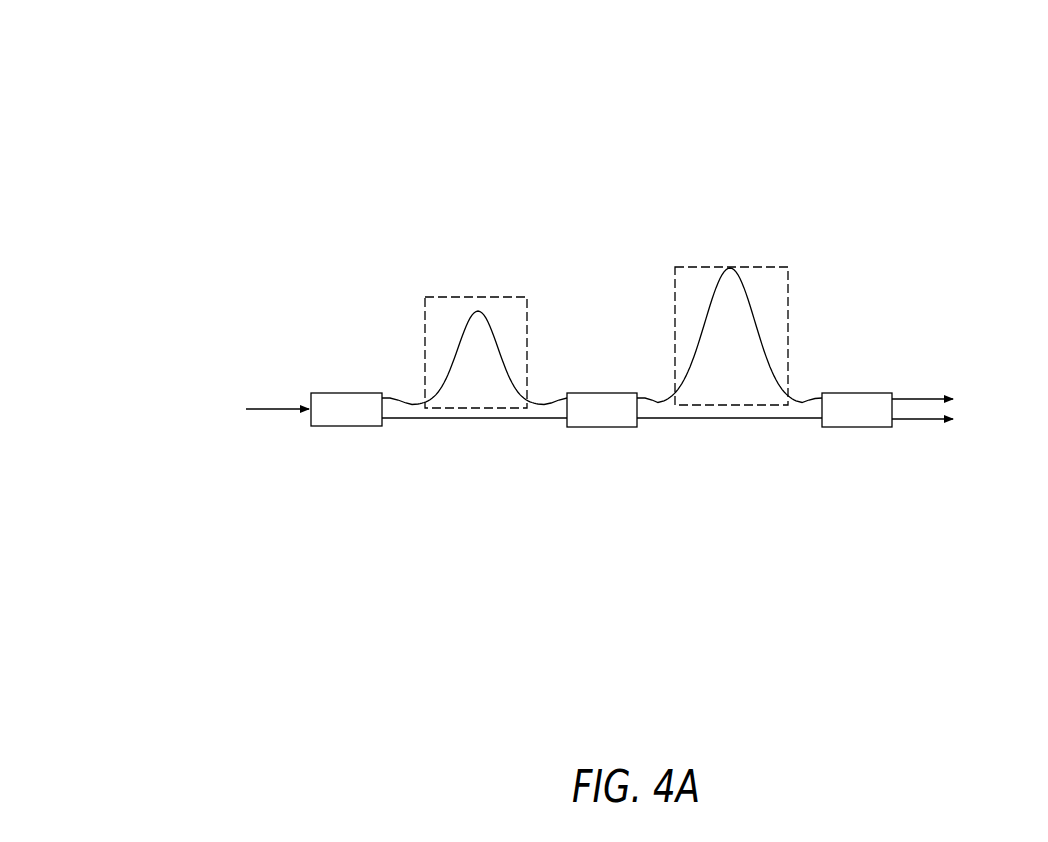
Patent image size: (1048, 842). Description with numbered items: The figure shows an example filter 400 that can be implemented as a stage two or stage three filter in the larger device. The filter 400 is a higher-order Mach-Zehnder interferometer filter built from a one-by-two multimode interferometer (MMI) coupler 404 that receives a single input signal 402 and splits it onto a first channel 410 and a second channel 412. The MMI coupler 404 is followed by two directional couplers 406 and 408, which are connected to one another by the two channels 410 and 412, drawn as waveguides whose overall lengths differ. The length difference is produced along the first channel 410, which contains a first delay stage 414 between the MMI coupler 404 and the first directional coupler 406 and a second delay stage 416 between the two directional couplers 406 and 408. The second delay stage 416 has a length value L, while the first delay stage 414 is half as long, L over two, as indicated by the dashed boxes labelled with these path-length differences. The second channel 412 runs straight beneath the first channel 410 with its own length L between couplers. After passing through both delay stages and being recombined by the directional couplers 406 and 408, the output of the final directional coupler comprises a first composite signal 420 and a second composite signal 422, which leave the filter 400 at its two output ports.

The filter 400 is at (160, 76).
The input signal 402 is at (265, 411).
The 1×2 multimode interferometer (MMI) coupler 404 is at (333, 393).
The directional coupler 406 is at (590, 393).
The directional coupler 408 is at (868, 393).
The first channel 410 is at (384, 396).
The second channel 412 is at (402, 420).
The first delay stage 414 is at (425, 297).
The second delay stage 416 is at (675, 268).
The first composite signal 420 is at (930, 399).
The second composite signal 422 is at (918, 421).